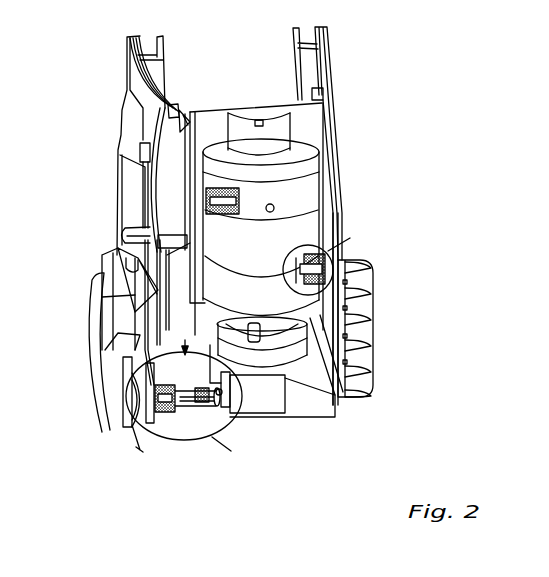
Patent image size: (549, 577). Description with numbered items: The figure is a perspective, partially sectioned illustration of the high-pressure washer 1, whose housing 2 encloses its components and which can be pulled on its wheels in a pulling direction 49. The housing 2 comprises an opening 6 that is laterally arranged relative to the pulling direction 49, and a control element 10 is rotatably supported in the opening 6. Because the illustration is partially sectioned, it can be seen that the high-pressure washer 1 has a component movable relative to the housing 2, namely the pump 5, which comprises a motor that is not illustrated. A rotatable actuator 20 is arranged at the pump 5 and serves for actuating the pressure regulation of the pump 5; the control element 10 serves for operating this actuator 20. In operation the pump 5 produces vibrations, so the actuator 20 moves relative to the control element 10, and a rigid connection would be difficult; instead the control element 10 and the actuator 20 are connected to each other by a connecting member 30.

The high-pressure washer 1 is at (405, 62).
The housing 2 is at (141, 331).
The pump 5 is at (268, 400).
The opening 6 is at (139, 377).
The control element 10 is at (140, 408).
The actuator 20 is at (213, 401).
The connecting member 30 is at (181, 405).
The pulling direction 49 is at (262, 452).